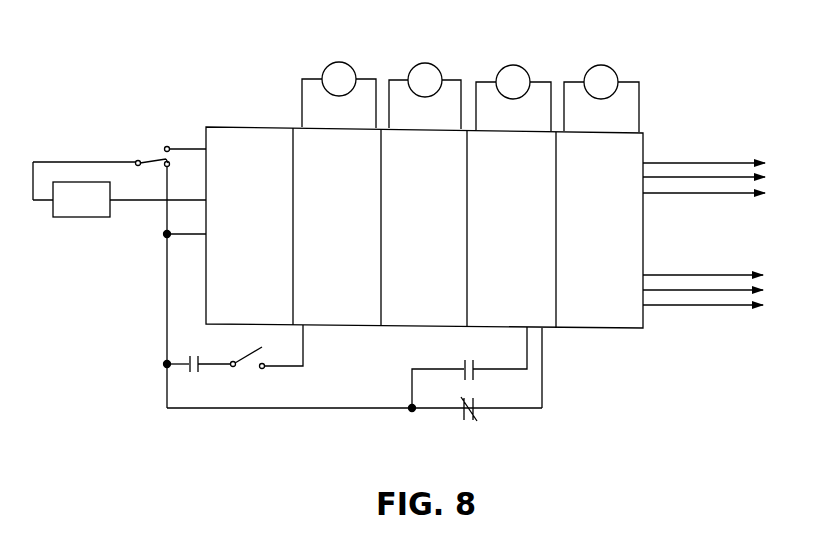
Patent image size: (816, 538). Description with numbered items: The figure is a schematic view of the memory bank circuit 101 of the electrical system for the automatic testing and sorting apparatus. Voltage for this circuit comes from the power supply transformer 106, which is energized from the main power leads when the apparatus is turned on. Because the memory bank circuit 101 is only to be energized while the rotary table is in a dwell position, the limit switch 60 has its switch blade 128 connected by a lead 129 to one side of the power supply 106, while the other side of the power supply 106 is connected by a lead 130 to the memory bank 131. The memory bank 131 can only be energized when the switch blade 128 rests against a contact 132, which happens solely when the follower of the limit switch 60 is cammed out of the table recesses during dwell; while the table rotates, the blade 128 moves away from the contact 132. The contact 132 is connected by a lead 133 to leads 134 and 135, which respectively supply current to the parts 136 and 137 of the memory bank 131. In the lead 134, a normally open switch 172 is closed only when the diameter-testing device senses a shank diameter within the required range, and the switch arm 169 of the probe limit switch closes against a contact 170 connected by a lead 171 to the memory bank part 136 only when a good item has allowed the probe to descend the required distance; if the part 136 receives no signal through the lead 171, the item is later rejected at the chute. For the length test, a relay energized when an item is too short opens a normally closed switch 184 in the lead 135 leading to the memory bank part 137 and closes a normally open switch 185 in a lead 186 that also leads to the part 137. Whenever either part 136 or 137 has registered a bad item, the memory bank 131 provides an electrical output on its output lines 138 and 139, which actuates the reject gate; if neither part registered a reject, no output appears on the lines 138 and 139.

The memory bank circuit 101 is at (670, 83).
The limit switch 60 is at (145, 148).
The power supply transformer 106 is at (87, 208).
The switch blade 128 is at (158, 160).
The lead 129 is at (80, 162).
The lead 130 is at (148, 202).
The memory bank 131 is at (606, 331).
The contact 132 is at (172, 163).
The lead 133 is at (165, 290).
The lead 134 is at (180, 362).
The lead 135 is at (205, 408).
The memory bank part 136 is at (345, 297).
The memory bank part 137 is at (537, 308).
The output line 138 is at (710, 193).
The output line 139 is at (710, 305).
The switch arm 169 is at (248, 350).
The contact 170 is at (264, 369).
The lead 171 is at (303, 350).
The normally open switch 172 is at (185, 374).
The normally closed switch 184 is at (467, 430).
The normally open switch 185 is at (457, 360).
The lead 186 is at (492, 370).